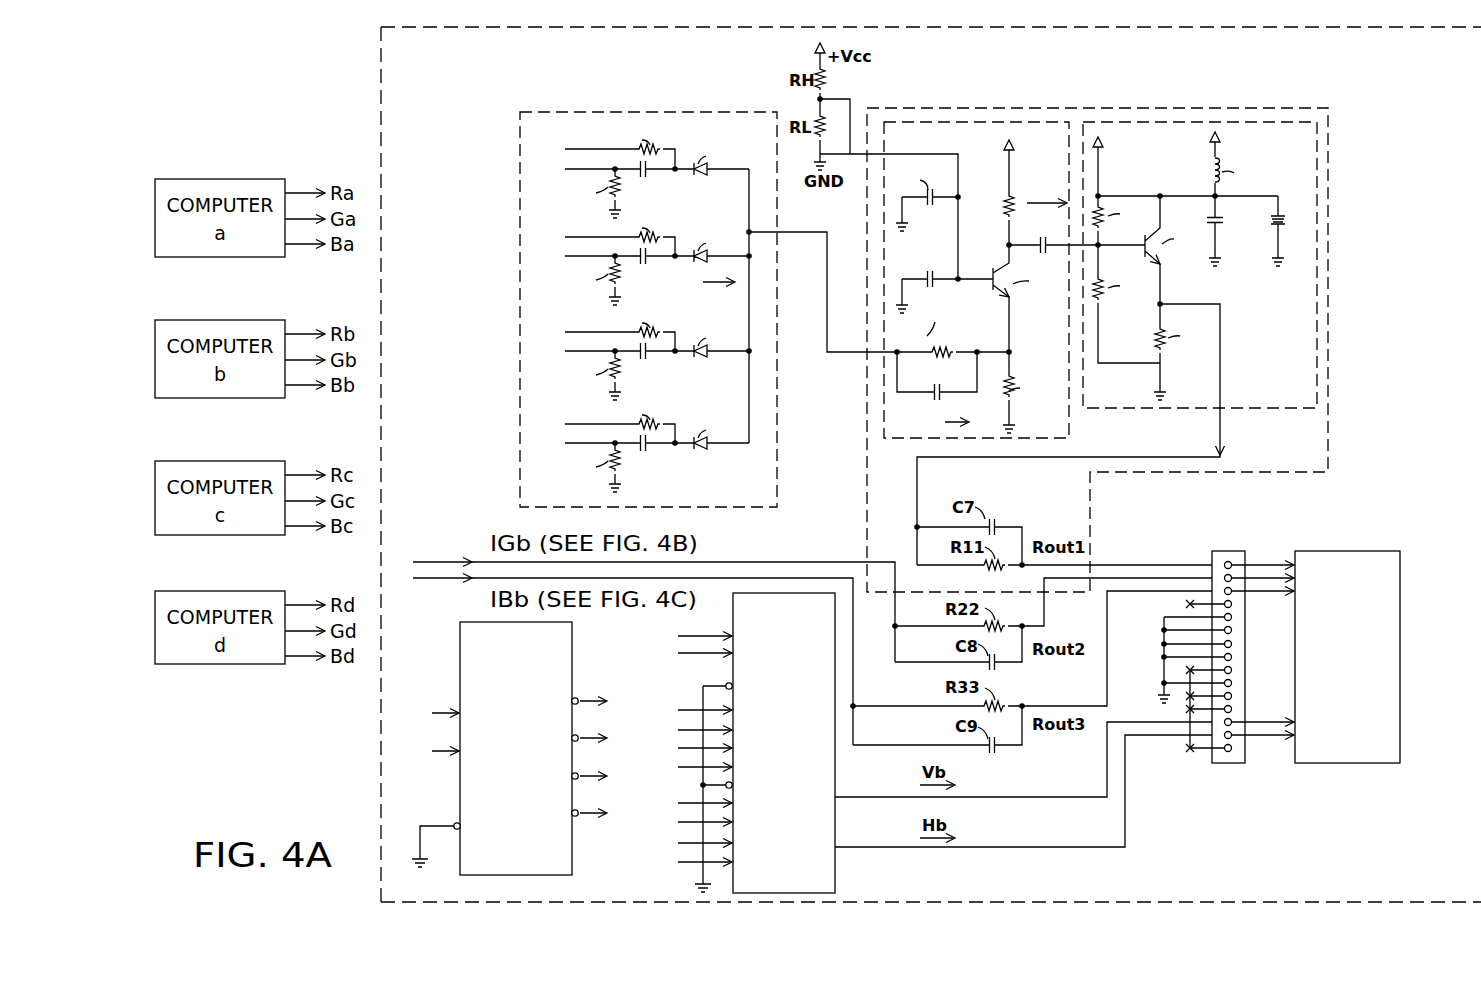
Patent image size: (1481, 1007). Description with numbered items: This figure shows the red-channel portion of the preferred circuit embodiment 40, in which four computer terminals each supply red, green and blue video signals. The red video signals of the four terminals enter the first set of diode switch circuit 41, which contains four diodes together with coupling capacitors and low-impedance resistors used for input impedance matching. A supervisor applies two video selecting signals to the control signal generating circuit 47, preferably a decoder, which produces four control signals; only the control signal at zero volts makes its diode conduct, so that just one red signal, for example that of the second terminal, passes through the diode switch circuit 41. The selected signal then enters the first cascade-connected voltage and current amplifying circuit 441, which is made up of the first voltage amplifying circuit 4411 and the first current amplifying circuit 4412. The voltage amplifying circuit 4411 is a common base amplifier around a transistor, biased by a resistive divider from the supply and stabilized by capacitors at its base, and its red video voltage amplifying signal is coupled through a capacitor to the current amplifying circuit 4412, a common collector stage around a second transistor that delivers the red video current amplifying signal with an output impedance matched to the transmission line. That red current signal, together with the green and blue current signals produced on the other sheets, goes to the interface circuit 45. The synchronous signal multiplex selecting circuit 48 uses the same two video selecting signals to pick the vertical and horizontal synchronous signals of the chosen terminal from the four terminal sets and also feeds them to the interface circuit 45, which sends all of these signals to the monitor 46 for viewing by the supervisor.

The preferred circuit embodiment 40 is at (381, 95).
The first set of diode switch circuit 41 is at (518, 248).
The first cascade-connected voltage and current amplifying circuit 441 is at (1330, 227).
The first voltage amplifying circuit 4411 is at (913, 119).
The first current amplifying circuit 4412 is at (1135, 412).
The interface circuit 45 is at (1231, 767).
The monitor 46 is at (1347, 657).
The control signal generating circuit 47 is at (517, 754).
The synchronous signal multiplex selecting circuit 48 is at (737, 743).